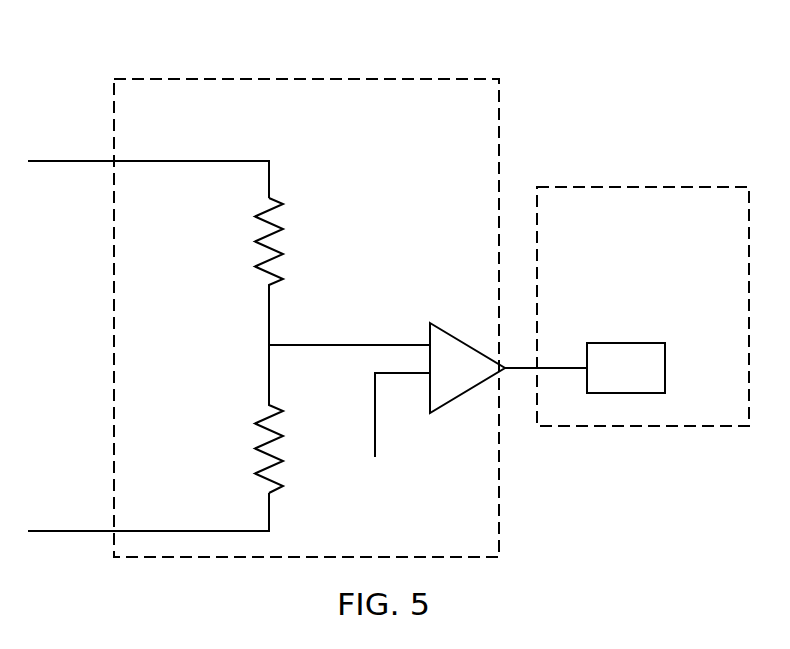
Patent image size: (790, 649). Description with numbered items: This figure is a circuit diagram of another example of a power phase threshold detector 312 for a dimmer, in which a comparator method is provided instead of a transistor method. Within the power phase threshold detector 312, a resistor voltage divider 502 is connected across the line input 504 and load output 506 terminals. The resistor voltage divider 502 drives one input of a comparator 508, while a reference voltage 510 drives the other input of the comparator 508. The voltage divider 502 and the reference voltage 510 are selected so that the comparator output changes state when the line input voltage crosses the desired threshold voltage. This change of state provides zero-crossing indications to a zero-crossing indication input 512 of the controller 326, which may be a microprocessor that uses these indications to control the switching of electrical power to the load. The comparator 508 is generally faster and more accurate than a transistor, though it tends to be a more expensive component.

The power phase threshold detector 312 is at (441, 79).
The controller 326 is at (636, 187).
The resistor voltage divider 502 is at (318, 250).
The line input 504 is at (206, 160).
The load output 506 is at (206, 531).
The comparator 508 is at (457, 330).
The reference voltage 510 is at (400, 470).
The zero-crossing indication input 512 is at (665, 368).